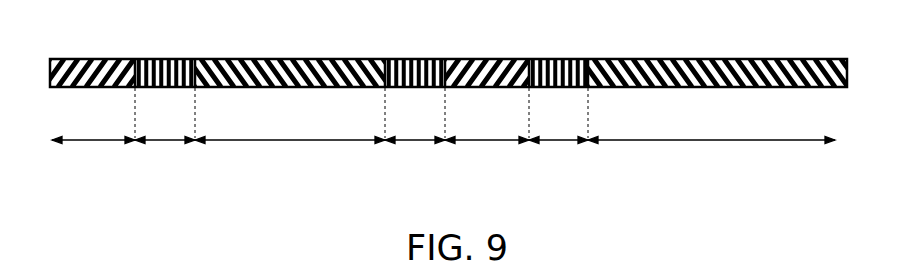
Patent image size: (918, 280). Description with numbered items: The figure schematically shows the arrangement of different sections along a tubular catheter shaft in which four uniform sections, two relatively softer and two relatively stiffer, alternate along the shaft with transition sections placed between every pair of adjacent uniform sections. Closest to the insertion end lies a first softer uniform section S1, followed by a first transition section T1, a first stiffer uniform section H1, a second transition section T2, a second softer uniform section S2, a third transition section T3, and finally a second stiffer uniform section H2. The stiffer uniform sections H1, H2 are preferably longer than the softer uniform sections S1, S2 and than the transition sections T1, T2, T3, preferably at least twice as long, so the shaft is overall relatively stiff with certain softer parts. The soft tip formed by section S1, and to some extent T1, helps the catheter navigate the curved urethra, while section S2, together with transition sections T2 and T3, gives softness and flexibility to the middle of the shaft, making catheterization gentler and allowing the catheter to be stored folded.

The first softer uniform section S1 is at (89, 101).
The first transition section T1 is at (165, 101).
The first stiffer uniform section H1 is at (289, 101).
The second transition section T2 is at (415, 101).
The second softer uniform section S2 is at (484, 101).
The third transition section T3 is at (558, 101).
The second stiffer uniform section H2 is at (714, 101).